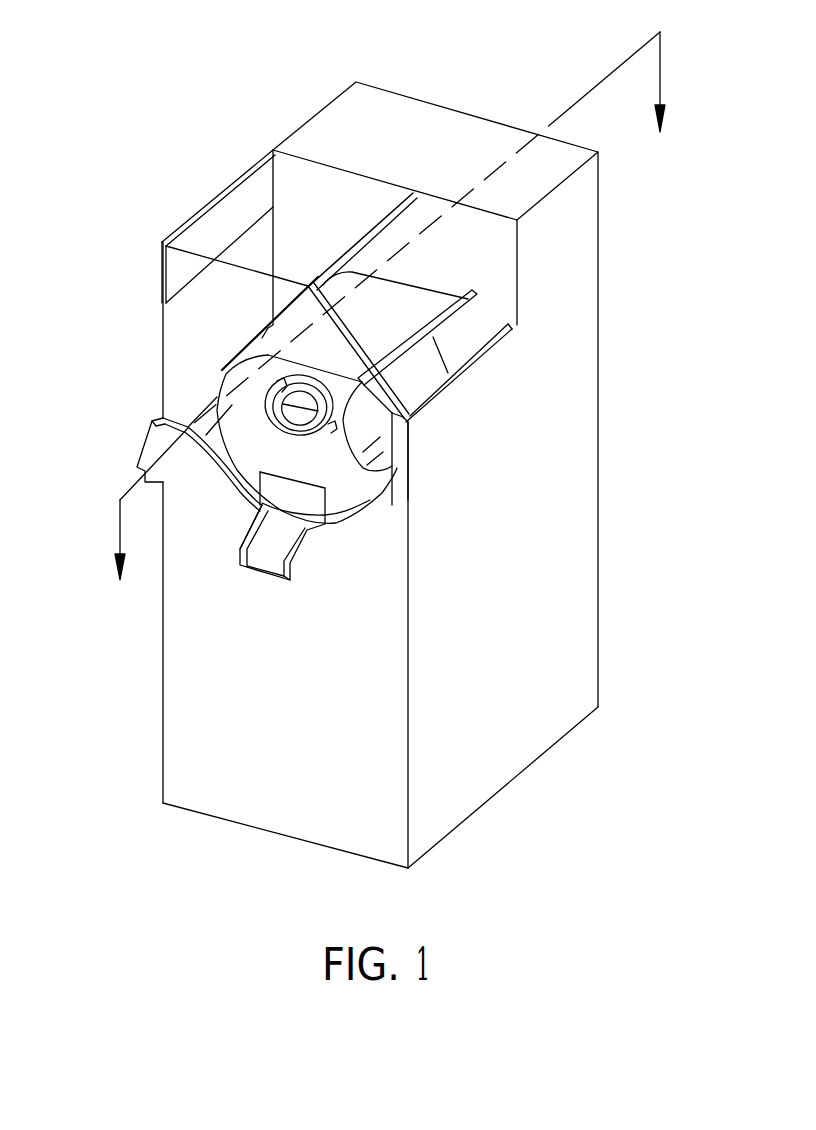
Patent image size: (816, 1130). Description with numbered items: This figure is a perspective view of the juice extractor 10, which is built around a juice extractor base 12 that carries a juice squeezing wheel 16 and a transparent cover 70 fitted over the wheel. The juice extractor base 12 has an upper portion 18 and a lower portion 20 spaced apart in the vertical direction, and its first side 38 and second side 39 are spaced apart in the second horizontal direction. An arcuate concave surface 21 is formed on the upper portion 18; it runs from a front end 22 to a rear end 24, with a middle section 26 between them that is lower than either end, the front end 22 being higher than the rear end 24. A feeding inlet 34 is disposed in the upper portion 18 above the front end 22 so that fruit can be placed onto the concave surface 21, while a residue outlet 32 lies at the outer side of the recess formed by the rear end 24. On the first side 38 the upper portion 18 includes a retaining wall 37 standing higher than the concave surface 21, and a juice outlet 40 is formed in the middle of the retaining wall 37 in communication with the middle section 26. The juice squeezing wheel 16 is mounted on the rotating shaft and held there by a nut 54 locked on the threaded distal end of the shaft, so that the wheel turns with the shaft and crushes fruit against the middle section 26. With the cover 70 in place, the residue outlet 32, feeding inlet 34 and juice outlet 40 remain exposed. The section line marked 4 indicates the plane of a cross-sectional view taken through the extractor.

The juice extractor 10 is at (246, 60).
The juice extractor base 12 is at (502, 769).
The juice squeezing wheel 16 is at (297, 306).
The upper portion 18 is at (390, 533).
The lower portion 20 is at (267, 833).
The arcuate concave surface 21 is at (335, 518).
The front end 22 is at (475, 363).
The rear end 24 is at (208, 438).
The middle section 26 is at (293, 517).
The residue outlet 32 is at (166, 416).
The feeding inlet 34 is at (498, 287).
The retaining wall 37 is at (408, 470).
The first side 38 is at (345, 810).
The second side 39 is at (600, 226).
The juice outlet 40 is at (257, 560).
The nut 54 is at (276, 380).
The transparent cover 70 is at (253, 174).
The section line 4- 4 is at (388, 330).